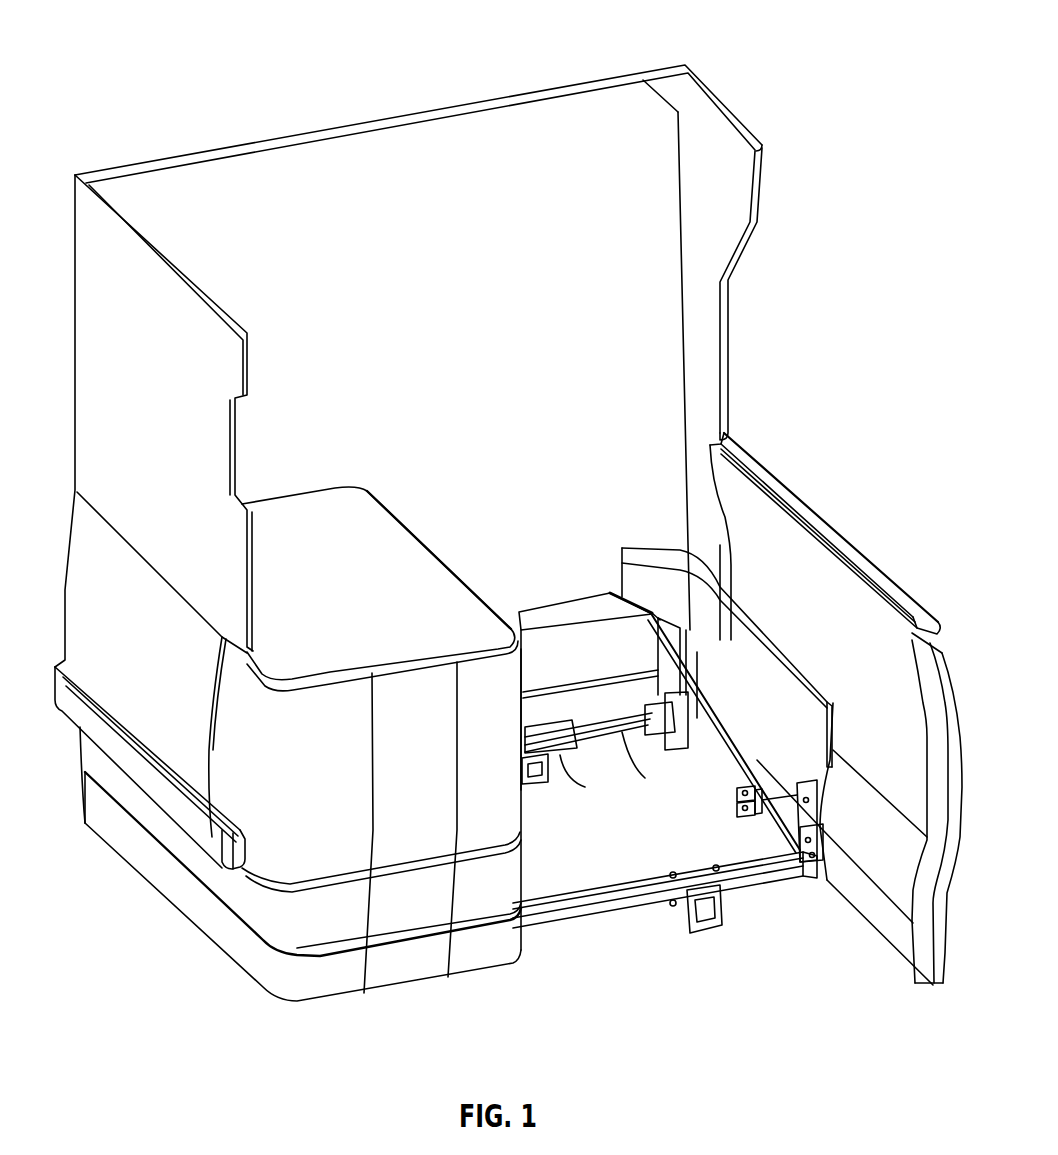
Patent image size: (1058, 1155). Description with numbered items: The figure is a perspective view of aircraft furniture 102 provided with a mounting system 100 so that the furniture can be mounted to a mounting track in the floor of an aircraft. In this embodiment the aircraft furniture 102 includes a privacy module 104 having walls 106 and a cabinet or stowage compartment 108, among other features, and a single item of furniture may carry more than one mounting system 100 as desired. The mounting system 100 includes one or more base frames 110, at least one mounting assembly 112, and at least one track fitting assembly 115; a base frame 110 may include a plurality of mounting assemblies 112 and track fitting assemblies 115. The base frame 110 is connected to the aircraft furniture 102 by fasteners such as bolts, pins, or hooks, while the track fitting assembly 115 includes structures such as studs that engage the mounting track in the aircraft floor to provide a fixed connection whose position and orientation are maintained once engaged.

The mounting system 100 is at (667, 820).
The aircraft furniture 102 is at (500, 494).
The privacy module 104 is at (593, 83).
The walls 106 is at (80, 215).
The cabinet or stowage compartment 108 is at (352, 968).
The base frame 110 is at (615, 740).
The mounting assembly 112 is at (565, 758).
The track fitting assembly 115 is at (702, 935).